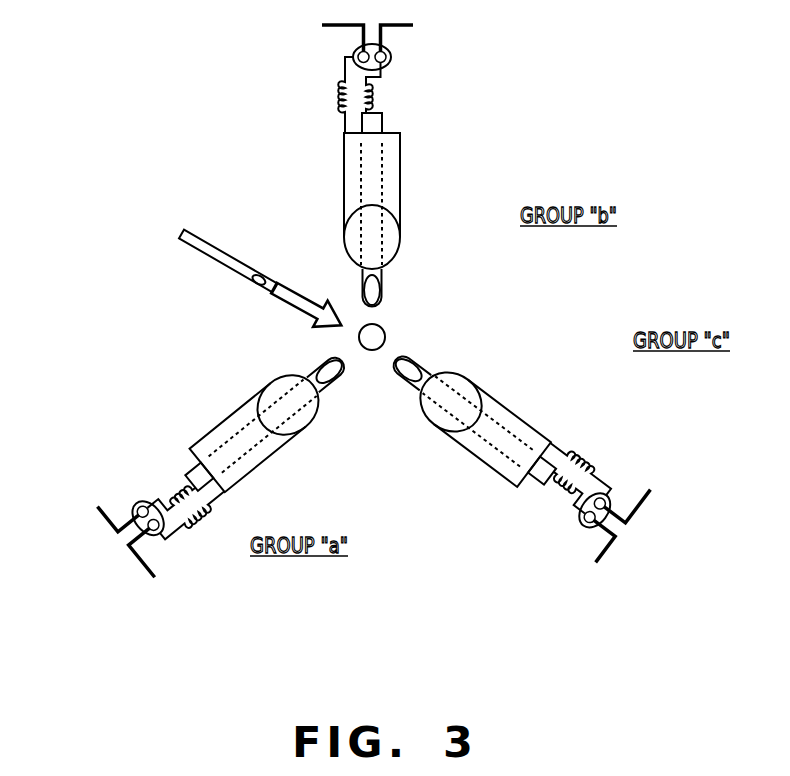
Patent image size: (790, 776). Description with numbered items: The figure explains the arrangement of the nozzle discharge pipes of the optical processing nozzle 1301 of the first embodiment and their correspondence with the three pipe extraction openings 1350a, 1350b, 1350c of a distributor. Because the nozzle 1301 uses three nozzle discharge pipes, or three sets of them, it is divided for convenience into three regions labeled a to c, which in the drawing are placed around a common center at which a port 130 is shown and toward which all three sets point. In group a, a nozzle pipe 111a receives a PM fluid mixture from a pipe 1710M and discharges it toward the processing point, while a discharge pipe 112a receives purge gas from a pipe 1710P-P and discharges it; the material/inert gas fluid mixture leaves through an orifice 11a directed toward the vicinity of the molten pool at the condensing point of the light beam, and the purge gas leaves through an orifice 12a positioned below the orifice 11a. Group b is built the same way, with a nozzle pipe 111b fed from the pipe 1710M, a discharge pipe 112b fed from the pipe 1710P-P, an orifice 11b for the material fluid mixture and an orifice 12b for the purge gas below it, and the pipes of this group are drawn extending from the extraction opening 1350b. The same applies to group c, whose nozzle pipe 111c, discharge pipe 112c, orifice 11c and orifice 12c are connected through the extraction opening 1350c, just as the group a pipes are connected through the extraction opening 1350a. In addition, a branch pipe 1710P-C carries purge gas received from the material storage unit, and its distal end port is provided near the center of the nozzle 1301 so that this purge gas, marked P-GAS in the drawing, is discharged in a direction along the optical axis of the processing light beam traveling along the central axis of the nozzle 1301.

The optical processing nozzle 1301 is at (162, 134).
The branch pipe 1710P-C is at (188, 229).
The process gas flow P-GAS is at (282, 307).
The gas supply port 130 is at (359, 340).
The orifice 11a is at (343, 370).
The orifice 12a is at (310, 427).
The nozzle pipe 111a is at (190, 468).
The discharge pipe 112a is at (253, 457).
The pipe extraction opening 1350a is at (133, 507).
The orifice 11b is at (374, 293).
The orifice 12b is at (400, 240).
The nozzle pipe 111b is at (382, 120).
The discharge pipe 112b is at (399, 177).
The pipe extraction opening 1350b is at (390, 54).
The orifice 11c is at (410, 355).
The orifice 12c is at (463, 380).
The nozzle pipe 111c is at (514, 437).
The discharge pipe 112c is at (500, 402).
The pipe extraction opening 1350c is at (610, 507).
The pipe 1710P-P is at (439, 305).
The pipe 1710M is at (327, 298).